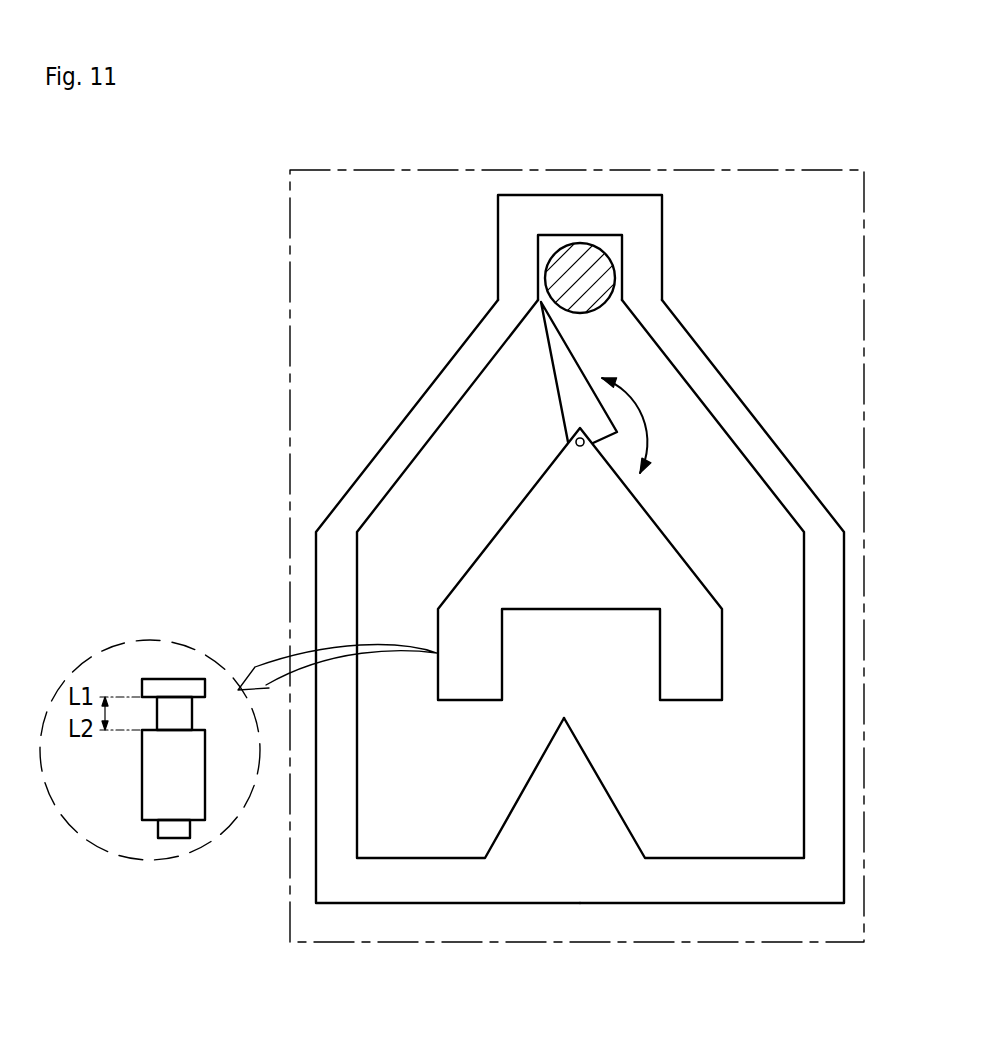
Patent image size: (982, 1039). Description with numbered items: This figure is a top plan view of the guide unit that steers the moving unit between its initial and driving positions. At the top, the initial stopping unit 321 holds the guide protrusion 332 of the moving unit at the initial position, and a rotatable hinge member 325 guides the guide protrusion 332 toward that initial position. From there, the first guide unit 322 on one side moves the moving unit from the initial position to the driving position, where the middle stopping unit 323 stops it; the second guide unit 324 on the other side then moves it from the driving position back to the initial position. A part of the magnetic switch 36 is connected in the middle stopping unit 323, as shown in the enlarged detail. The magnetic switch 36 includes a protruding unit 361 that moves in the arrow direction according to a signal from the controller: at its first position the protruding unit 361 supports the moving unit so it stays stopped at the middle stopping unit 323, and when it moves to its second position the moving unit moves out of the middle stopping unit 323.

The initial stopping unit 321 is at (610, 243).
The guide protrusion 332 is at (597, 270).
The hinge member 325 is at (563, 363).
The second guide unit 324 is at (420, 500).
The first guide unit 322 is at (723, 470).
The middle stopping unit 323 is at (627, 663).
The magnetic switch 36 is at (148, 780).
The protruding unit 361 is at (173, 688).